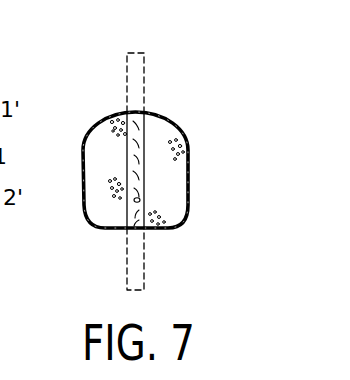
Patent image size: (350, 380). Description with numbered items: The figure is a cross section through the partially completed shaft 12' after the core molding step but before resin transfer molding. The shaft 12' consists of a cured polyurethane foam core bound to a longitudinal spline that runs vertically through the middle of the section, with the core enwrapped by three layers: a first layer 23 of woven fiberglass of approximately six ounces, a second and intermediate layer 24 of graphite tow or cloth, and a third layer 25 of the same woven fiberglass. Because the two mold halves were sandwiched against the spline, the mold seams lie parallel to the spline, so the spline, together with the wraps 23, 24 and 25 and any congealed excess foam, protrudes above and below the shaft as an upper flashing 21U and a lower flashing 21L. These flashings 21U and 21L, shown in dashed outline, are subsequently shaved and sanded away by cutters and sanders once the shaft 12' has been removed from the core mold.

The shaft 12' is at (125, 144).
The upper flashing of the spline 21U is at (149, 144).
The lower flashing of the spline 21L is at (142, 270).
The first layer 23 is at (149, 144).
The second layer 24 is at (149, 144).
The third layer 25 is at (124, 240).